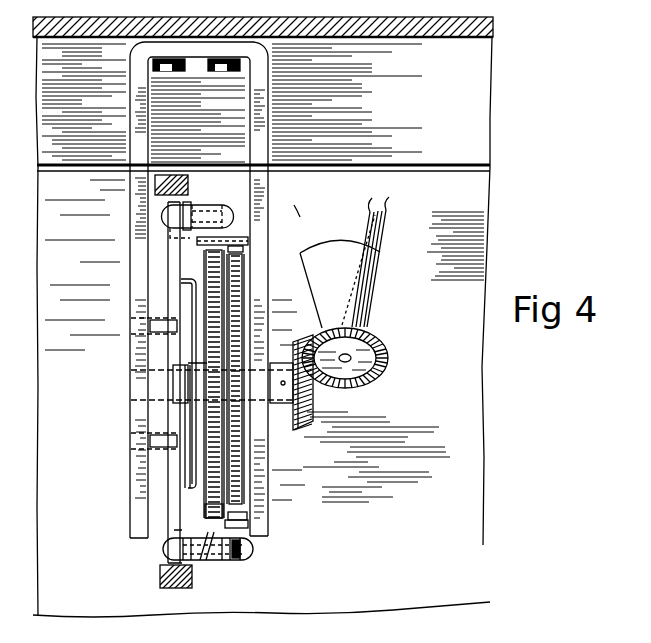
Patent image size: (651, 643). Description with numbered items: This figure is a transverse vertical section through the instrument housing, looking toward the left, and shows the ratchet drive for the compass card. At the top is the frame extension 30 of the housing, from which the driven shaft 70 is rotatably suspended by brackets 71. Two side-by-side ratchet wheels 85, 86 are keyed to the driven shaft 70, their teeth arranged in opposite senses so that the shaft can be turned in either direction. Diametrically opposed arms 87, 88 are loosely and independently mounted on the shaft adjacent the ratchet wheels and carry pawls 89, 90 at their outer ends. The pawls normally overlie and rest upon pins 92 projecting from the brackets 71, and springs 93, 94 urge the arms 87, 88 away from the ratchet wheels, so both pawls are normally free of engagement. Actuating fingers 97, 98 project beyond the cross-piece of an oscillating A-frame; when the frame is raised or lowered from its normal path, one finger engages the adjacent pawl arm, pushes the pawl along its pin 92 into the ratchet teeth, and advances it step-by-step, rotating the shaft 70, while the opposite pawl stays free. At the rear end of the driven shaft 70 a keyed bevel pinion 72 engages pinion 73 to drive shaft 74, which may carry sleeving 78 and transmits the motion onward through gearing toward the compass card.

The frame extension 30 is at (418, 38).
The brackets 71 is at (140, 211).
The actuating finger 97 is at (188, 188).
The arm 87 is at (168, 255).
The arm 88 is at (168, 484).
The pawl 89 is at (250, 240).
The pins 92 is at (243, 250).
The ratchet wheel 86 is at (243, 297).
The ratchet wheel 85 is at (208, 502).
The pawl 90 is at (249, 516).
The spring 93 is at (190, 296).
The spring 94 is at (190, 462).
The driven shaft 70 is at (148, 392).
The actuating finger 98 is at (160, 578).
The pinion 73 is at (367, 370).
The shaft 74 is at (343, 361).
The sleeving 78 is at (360, 297).
The bevel pinion 72 is at (312, 424).